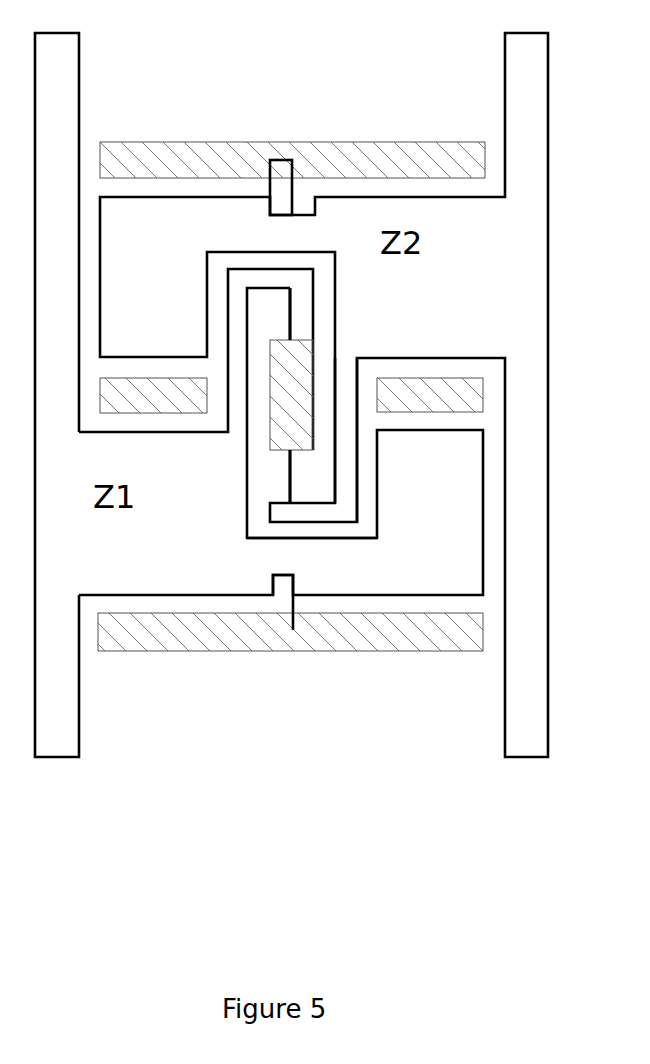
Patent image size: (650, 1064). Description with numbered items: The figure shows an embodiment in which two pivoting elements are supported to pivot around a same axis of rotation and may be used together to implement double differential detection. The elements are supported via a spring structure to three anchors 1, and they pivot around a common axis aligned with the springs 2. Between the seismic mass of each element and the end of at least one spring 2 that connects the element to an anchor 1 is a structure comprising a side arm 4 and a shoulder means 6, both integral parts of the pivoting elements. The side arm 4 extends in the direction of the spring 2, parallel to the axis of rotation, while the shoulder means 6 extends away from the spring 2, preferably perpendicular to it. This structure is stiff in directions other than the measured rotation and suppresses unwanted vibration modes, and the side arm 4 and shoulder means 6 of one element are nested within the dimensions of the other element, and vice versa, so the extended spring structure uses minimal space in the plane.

The anchor 1 is at (291, 395).
The spring 2 is at (306, 175).
The side arm 4 is at (356, 481).
The shoulder means 6 is at (287, 546).